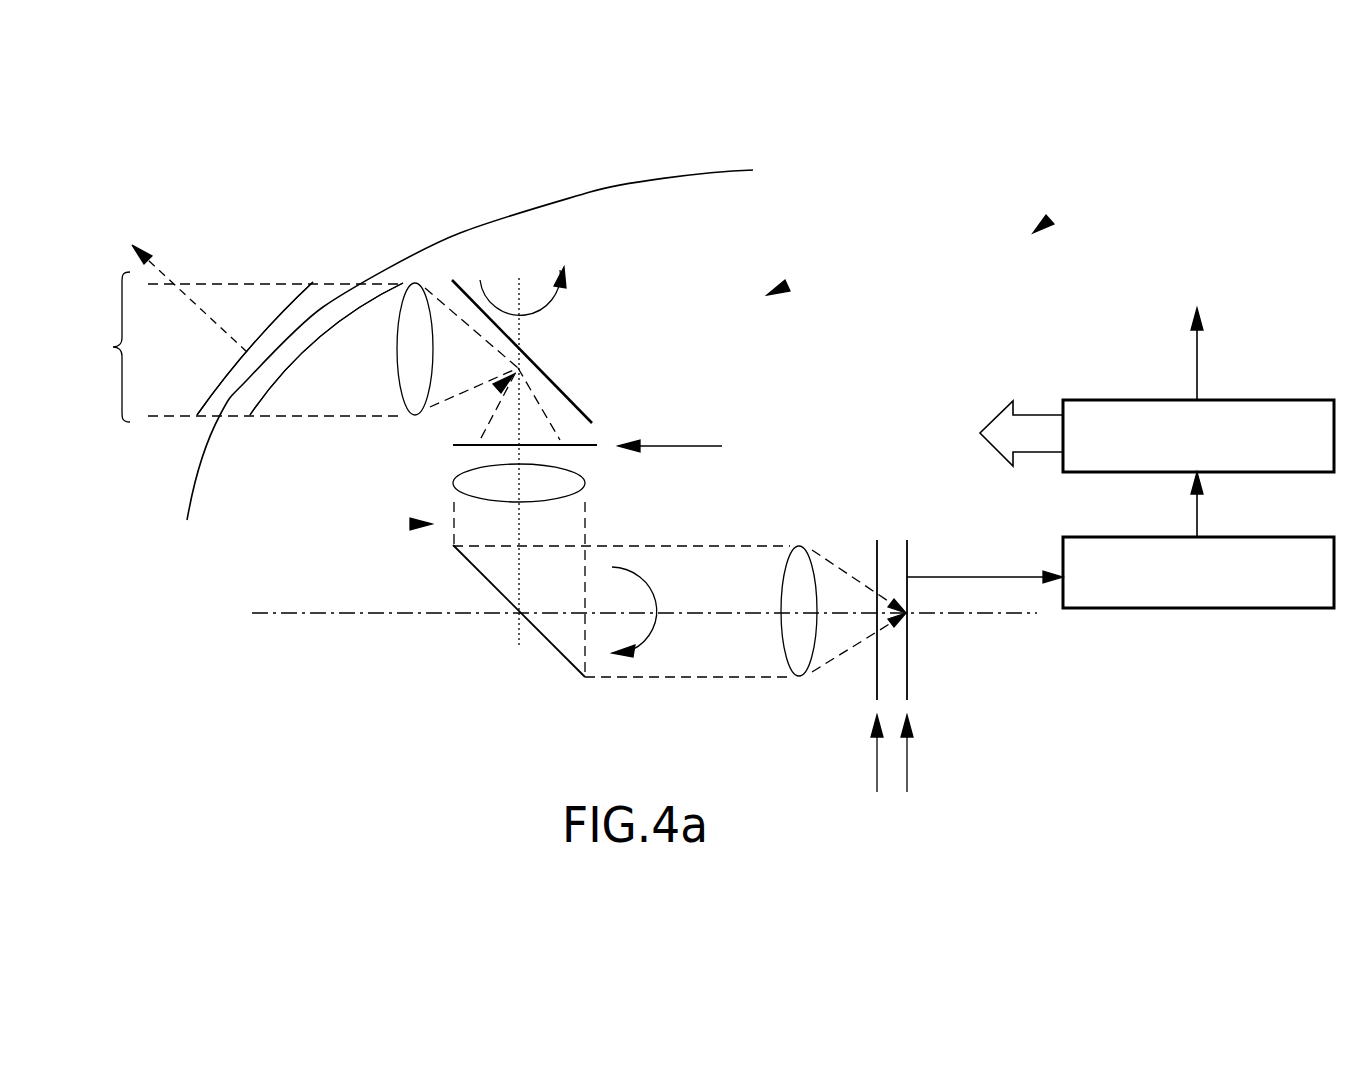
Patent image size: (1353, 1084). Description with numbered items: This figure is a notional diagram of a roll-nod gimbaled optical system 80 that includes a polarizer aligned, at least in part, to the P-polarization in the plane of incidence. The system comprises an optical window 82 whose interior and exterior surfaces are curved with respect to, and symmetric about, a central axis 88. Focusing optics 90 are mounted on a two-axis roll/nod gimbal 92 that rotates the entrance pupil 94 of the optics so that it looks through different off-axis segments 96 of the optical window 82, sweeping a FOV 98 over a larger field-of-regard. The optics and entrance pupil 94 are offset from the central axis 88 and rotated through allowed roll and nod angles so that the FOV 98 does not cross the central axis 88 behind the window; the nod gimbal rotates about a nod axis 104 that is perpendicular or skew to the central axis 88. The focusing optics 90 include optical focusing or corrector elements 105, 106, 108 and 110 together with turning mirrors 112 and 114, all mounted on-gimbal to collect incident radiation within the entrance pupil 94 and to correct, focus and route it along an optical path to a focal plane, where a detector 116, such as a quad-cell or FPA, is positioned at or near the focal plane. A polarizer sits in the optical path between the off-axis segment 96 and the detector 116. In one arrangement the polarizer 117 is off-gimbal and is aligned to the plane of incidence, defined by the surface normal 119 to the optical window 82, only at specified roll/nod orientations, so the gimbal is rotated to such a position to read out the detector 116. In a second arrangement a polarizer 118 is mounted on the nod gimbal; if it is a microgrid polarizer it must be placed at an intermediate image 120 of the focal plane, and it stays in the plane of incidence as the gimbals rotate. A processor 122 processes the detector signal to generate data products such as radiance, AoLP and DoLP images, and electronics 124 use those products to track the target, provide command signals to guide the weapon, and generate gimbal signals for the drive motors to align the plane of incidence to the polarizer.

The optical system 80 is at (1050, 219).
The optical window 82 is at (623, 182).
The central axis 88 is at (278, 613).
The focusing optics 90 is at (787, 285).
The two-axis gimbal 92 is at (410, 524).
The entrance pupil 94 is at (245, 352).
The off-axis segment 96 is at (315, 278).
The FOV 98 is at (240, 347).
The nod axis 104 is at (480, 280).
The optical focusing or corrector element 105 is at (314, 347).
The optical focusing or corrector element 106 is at (400, 370).
The optical focusing or corrector element 108 is at (586, 483).
The optical focusing or corrector element 110 is at (797, 546).
The turning mirror 112 is at (545, 375).
The turning mirror 114 is at (497, 590).
The detector 116 is at (907, 761).
The polarizer 117 is at (877, 761).
The polarizer 118 is at (683, 446).
The surface normal 119 is at (163, 276).
The intermediate image 120 is at (497, 388).
The processor 122 is at (1068, 536).
The electronics 124 is at (1095, 399).